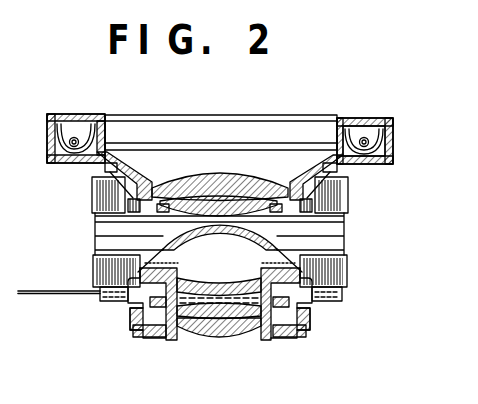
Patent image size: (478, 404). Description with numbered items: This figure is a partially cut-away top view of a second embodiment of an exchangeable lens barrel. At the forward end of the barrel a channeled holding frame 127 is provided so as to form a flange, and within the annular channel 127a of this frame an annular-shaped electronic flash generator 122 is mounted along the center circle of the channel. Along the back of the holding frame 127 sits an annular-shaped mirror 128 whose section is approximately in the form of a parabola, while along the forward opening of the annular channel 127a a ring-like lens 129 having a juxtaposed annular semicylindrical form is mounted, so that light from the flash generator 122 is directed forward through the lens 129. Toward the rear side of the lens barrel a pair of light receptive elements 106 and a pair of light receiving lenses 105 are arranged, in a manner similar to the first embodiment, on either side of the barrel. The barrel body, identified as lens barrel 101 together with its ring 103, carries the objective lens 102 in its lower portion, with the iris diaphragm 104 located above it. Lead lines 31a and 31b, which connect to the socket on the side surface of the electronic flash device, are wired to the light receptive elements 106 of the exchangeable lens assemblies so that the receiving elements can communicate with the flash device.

The lead line 31a is at (42, 290).
The lead line 31b is at (41, 296).
The lens barrel 101 is at (349, 212).
The objective lens 102 is at (222, 340).
The lens holding ring 103 is at (350, 278).
The iris diaphragm 104 is at (246, 261).
The light receiving lens 105 is at (148, 338).
The light receptive element 106 is at (130, 312).
The electronic flash generator 122 is at (391, 137).
The holding frame 127 is at (395, 141).
The annular channel 127a is at (380, 164).
The mirror 128 is at (367, 166).
The lens 129 is at (377, 118).